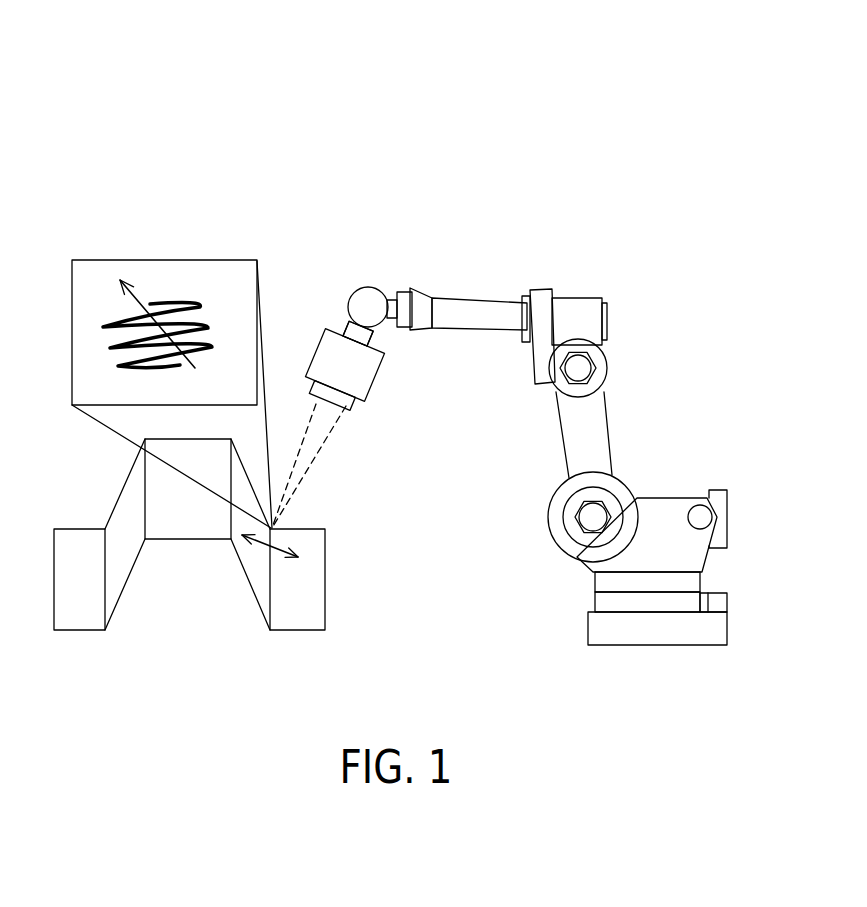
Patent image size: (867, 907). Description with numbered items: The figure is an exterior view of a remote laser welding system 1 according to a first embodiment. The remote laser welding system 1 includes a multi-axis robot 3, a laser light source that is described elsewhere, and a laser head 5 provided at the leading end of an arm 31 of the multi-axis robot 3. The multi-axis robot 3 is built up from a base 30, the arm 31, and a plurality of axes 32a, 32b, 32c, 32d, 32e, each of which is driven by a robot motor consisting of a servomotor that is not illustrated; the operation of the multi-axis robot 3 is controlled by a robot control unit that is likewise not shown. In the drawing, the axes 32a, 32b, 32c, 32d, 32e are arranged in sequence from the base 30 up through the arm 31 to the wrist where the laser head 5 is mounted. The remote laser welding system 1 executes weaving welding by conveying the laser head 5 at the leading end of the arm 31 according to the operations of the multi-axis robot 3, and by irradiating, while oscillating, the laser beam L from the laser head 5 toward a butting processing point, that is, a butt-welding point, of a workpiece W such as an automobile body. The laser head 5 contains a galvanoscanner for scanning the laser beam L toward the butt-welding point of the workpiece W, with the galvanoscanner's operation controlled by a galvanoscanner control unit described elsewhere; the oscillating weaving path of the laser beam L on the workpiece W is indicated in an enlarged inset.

The remote laser welding system 1 is at (630, 98).
The multi-axis robot 3 is at (507, 454).
The laser head 5 is at (365, 377).
The base 30 is at (663, 645).
The arm 31 is at (507, 388).
The axis 32a is at (627, 482).
The axis 32b is at (610, 363).
The axis 32c is at (575, 300).
The axis 32d is at (380, 288).
The axis 32e is at (347, 318).
The laser beam L is at (320, 452).
The workpiece W is at (118, 525).